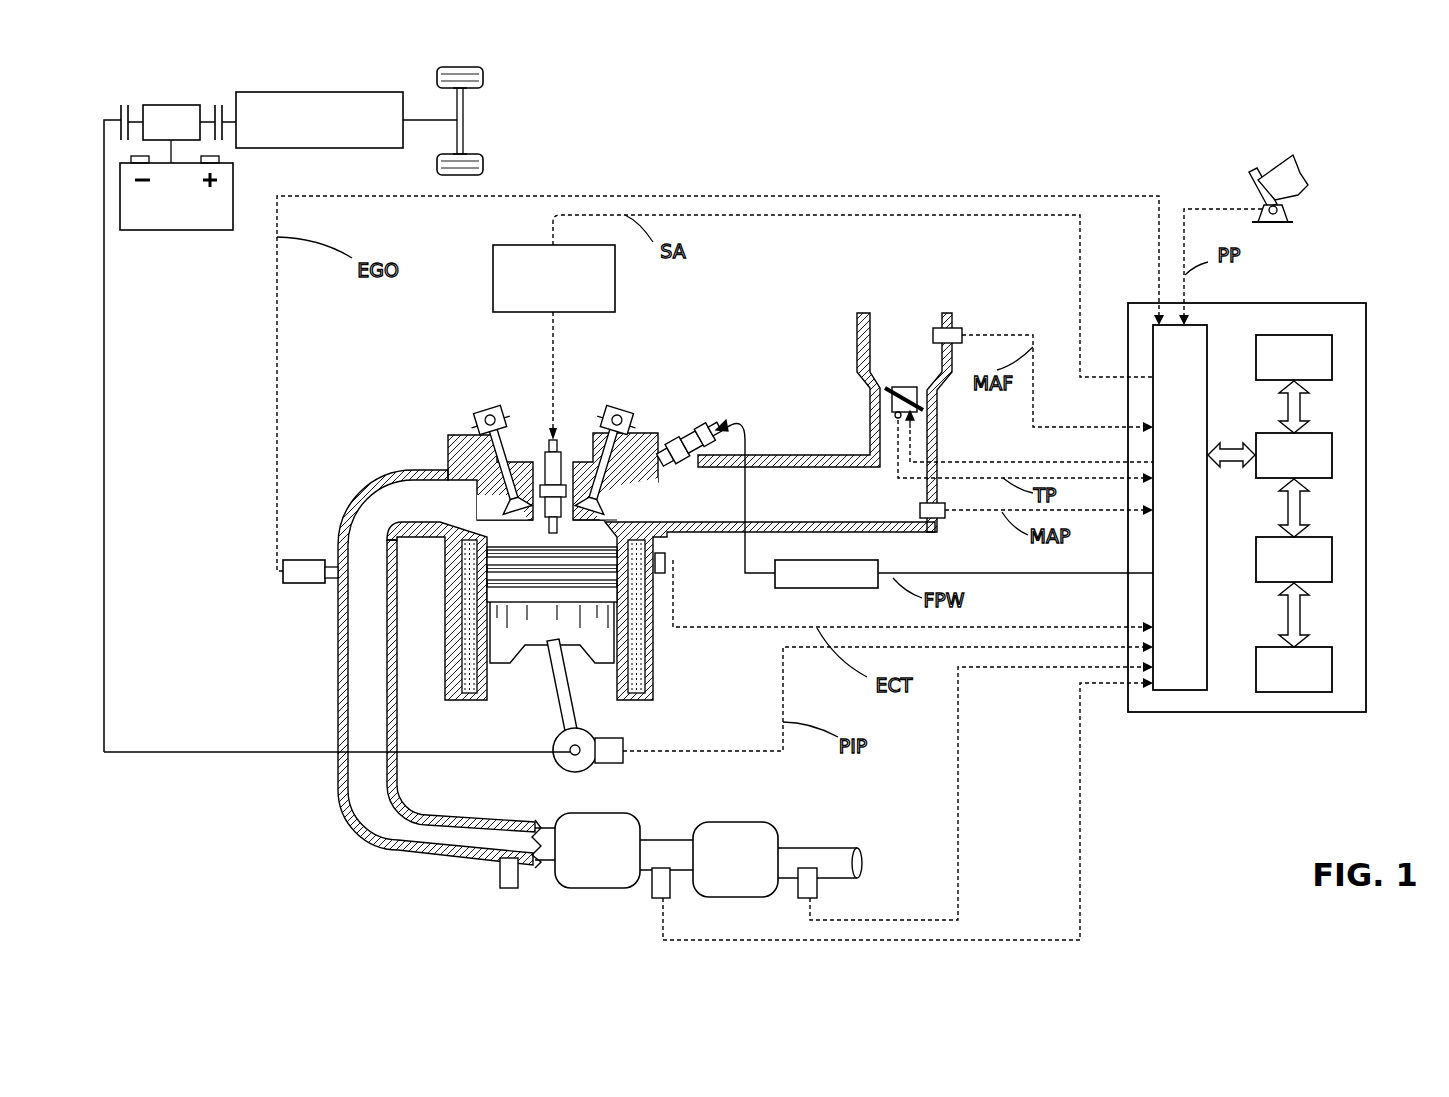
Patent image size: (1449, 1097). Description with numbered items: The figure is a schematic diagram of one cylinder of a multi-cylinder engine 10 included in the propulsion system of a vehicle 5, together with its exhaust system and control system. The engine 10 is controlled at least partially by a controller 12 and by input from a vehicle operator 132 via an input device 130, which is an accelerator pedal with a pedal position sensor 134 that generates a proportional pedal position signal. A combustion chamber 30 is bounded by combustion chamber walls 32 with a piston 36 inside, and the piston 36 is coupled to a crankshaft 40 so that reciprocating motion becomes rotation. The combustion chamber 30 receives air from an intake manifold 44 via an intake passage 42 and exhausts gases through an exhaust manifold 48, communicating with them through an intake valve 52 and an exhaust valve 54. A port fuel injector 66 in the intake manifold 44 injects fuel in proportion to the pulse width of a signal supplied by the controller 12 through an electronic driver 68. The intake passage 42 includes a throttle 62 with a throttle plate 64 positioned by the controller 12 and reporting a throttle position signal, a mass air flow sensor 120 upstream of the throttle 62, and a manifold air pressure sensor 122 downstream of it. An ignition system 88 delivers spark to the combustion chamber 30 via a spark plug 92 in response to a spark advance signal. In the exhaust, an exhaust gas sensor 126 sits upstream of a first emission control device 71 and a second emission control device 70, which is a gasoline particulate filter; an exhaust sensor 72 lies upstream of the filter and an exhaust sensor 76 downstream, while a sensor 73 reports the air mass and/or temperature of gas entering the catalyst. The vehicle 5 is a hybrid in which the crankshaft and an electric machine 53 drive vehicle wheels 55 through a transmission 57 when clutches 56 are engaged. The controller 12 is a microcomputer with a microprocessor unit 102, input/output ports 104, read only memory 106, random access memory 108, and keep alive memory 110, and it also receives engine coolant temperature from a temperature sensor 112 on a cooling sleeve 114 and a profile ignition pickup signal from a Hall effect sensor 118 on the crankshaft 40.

The vehicle 5 is at (1377, 103).
The engine 10 is at (385, 394).
The controller 12 is at (1288, 496).
The combustion chamber 30 is at (550, 540).
The combustion chamber walls 32 is at (487, 685).
The piston 36 is at (553, 637).
The crankshaft 40 is at (563, 772).
The intake passage 42 is at (887, 364).
The intake manifold 44 is at (824, 508).
The exhaust manifold 48 is at (425, 512).
The intake valve 52 is at (592, 512).
The electric machine 53 is at (181, 105).
The exhaust valve 54 is at (505, 515).
The vehicle wheels 55 is at (478, 94).
The clutch 56 is at (121, 108).
The transmission 57 is at (385, 150).
The throttle 62 is at (928, 393).
The throttle plate 64 is at (885, 393).
The fuel injector 66 is at (693, 438).
The electronic driver 68 is at (803, 593).
The second emission control device 70 is at (742, 822).
The first emission control device 71 is at (593, 885).
The exhaust sensor 72 is at (657, 902).
The sensor 73 is at (510, 892).
The exhaust sensor 76 is at (817, 890).
The ignition system 88 is at (510, 245).
The spark plug 92 is at (560, 437).
The microprocessor unit 102 is at (1332, 448).
The input/output ports 104 is at (1208, 333).
The read only memory 106 is at (1332, 353).
The random access memory 108 is at (1332, 558).
The keep alive memory 110 is at (1332, 667).
The temperature sensor 112 is at (665, 566).
The cooling sleeve 114 is at (638, 645).
The Hall effect sensor 118 is at (608, 767).
The mass air flow sensor 120 is at (958, 326).
The manifold air pressure sensor 122 is at (942, 520).
The exhaust gas sensor 126 is at (283, 569).
The input device 130 is at (1253, 183).
The vehicle operator 132 is at (1302, 172).
The pedal position sensor 134 is at (1285, 210).